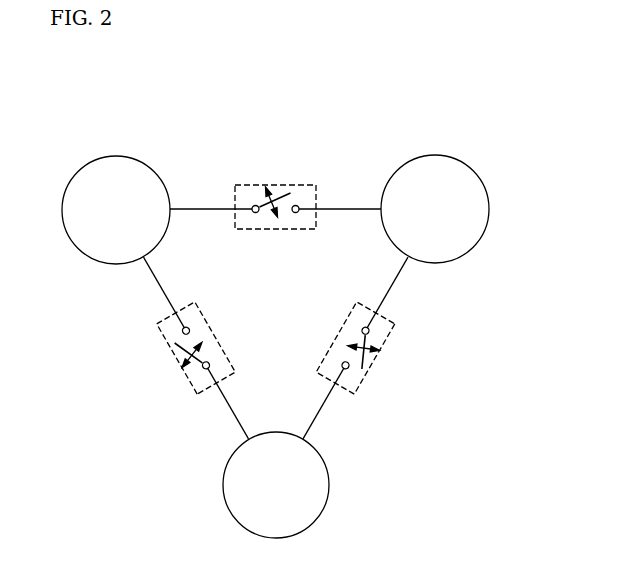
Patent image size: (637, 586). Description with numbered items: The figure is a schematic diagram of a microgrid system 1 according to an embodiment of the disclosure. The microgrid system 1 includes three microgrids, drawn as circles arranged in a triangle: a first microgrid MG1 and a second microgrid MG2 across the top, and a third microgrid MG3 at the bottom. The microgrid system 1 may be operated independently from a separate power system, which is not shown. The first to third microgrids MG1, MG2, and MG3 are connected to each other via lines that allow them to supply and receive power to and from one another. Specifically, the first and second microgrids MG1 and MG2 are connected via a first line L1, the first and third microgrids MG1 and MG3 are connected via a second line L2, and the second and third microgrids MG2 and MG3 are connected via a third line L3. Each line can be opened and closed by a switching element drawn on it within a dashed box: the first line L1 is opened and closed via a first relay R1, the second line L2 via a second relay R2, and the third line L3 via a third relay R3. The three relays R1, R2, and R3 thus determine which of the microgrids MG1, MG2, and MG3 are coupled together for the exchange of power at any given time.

The microgrid system 1 is at (61, 80).
The first microgrid MG1 is at (116, 210).
The second microgrid MG2 is at (435, 209).
The third microgrid MG3 is at (276, 485).
The first line L1 is at (348, 208).
The second line L2 is at (157, 283).
The third line L3 is at (390, 287).
The first relay R1 is at (283, 183).
The second relay R2 is at (172, 357).
The third relay R3 is at (375, 367).